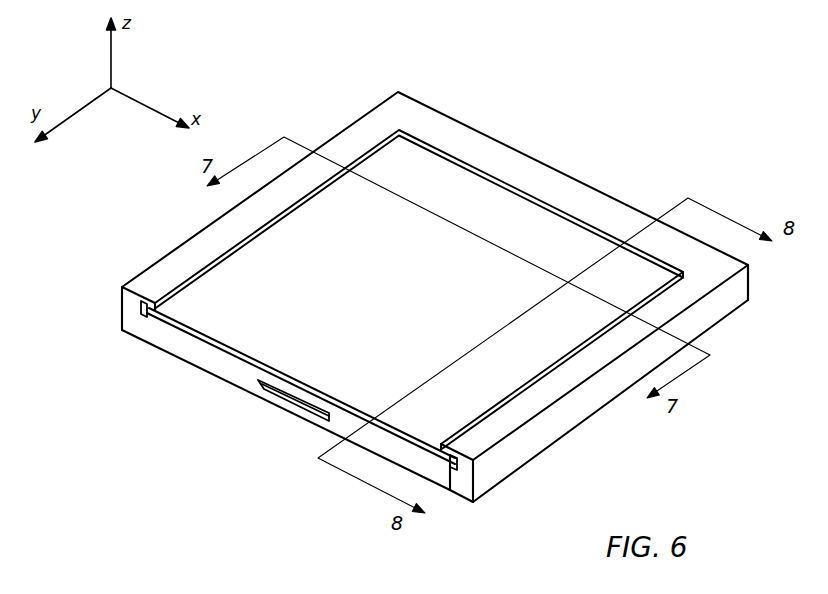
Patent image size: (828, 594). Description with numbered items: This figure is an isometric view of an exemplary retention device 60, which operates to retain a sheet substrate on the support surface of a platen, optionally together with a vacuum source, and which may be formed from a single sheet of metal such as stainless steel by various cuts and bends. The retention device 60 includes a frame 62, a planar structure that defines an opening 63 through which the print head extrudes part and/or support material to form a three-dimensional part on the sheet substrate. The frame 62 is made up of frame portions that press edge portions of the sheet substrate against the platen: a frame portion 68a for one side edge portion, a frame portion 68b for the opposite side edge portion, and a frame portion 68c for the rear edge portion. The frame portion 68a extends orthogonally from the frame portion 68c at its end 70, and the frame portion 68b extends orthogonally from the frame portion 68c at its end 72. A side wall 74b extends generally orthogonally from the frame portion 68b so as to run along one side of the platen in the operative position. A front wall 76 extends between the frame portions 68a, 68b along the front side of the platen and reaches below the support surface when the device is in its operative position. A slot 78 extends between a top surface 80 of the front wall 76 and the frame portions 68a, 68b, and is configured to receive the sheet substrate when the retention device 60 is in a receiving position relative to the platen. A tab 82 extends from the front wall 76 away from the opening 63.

The retention device 60 is at (571, 106).
The frame 62 is at (148, 282).
The opening 63 is at (418, 170).
The frame portion 68a is at (213, 243).
The frame portion 68b is at (515, 413).
The frame portion 68c is at (548, 183).
The end of frame portion 68c 70 is at (410, 110).
The end of frame portion 68c 72 is at (722, 270).
The side wall 74b is at (720, 307).
The front wall 76 is at (208, 367).
The slot 78 is at (152, 315).
The top surface of front wall 80 is at (242, 353).
The tab 82 is at (285, 392).